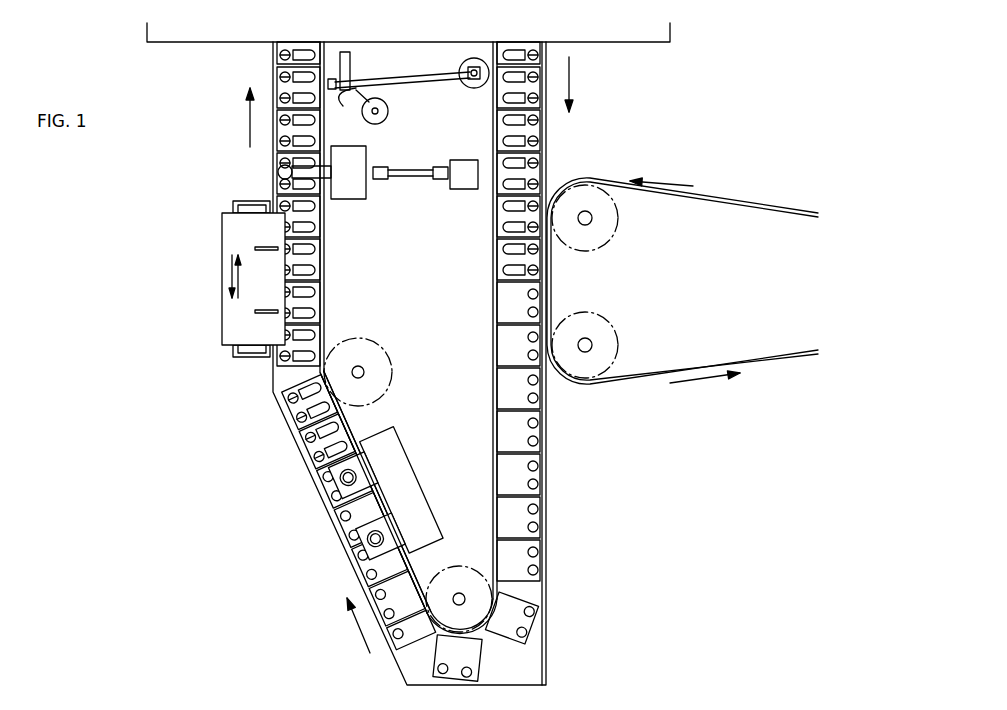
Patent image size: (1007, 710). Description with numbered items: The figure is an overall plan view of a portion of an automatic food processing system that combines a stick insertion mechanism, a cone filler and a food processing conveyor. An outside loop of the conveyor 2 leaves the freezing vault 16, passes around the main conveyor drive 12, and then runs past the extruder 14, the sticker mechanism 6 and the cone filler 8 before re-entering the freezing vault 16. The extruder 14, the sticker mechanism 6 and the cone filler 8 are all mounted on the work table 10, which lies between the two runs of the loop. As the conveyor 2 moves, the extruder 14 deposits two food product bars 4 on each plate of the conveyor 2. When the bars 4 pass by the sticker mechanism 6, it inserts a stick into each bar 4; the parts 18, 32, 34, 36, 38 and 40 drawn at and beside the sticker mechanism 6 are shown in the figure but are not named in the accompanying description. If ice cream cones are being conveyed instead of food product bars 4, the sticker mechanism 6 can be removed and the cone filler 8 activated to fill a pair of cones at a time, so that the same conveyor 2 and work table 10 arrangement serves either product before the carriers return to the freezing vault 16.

The conveyor 2 is at (547, 469).
The food product bars 4 is at (313, 270).
The sticker mechanism 6 is at (233, 279).
The cone filler 8 is at (355, 179).
The work table 10 is at (473, 130).
The main conveyor drive 12 is at (459, 592).
The extruder 14 is at (412, 499).
The freezing vault 16 is at (620, 43).
The reciprocating member 18 is at (263, 307).
The lever rod 32 is at (398, 73).
The stop bar 34 is at (352, 65).
The roller wheel 36 is at (468, 88).
The hook 38 is at (341, 109).
The cam 40 is at (388, 112).